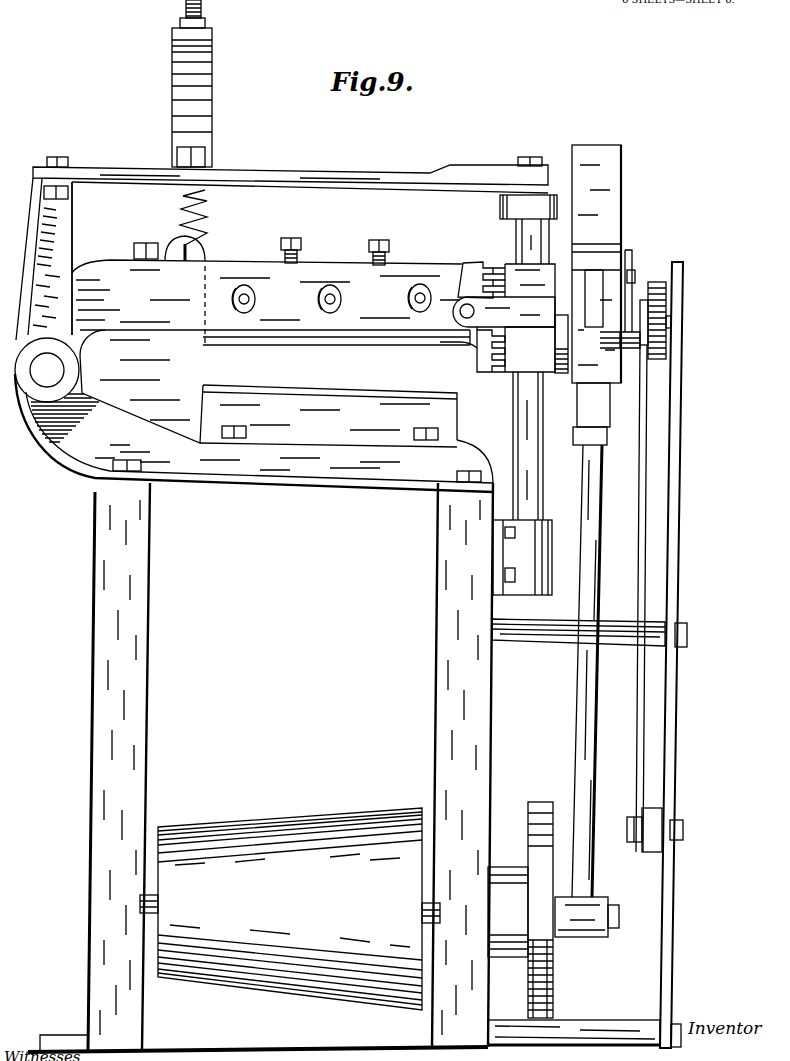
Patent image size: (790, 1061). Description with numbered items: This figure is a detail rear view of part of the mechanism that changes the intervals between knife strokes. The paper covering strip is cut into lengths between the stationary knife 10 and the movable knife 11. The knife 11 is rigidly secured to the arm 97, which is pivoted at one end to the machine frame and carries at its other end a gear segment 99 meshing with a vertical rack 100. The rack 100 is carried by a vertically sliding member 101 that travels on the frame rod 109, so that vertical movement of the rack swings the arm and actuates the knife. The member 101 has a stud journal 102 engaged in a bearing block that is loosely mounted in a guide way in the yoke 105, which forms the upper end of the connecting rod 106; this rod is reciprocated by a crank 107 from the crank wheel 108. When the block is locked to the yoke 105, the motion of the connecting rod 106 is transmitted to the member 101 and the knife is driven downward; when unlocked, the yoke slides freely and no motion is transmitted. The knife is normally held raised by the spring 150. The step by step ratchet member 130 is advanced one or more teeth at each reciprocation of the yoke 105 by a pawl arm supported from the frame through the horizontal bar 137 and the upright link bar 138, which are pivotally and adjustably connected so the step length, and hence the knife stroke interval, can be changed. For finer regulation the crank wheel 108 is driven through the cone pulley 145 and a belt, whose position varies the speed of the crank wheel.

The stationary knife 10 is at (205, 388).
The movable knife 11 is at (210, 340).
The arm 97 is at (271, 291).
The gear segment 99 is at (480, 355).
The vertical rack 100 is at (503, 283).
The vertically sliding member 101 is at (528, 358).
The stud journal 102 is at (553, 344).
The yoke 105 is at (610, 229).
The connecting rod 106 is at (589, 667).
The crank 107 is at (556, 938).
The crank wheel 108 is at (533, 912).
The frame rod 109 is at (525, 437).
The step by step ratchet member 130 is at (660, 355).
The horizontal bar 137 is at (653, 813).
The upright link bar 138 is at (645, 541).
The cone pulley 145 is at (290, 909).
The spring 150 is at (205, 205).